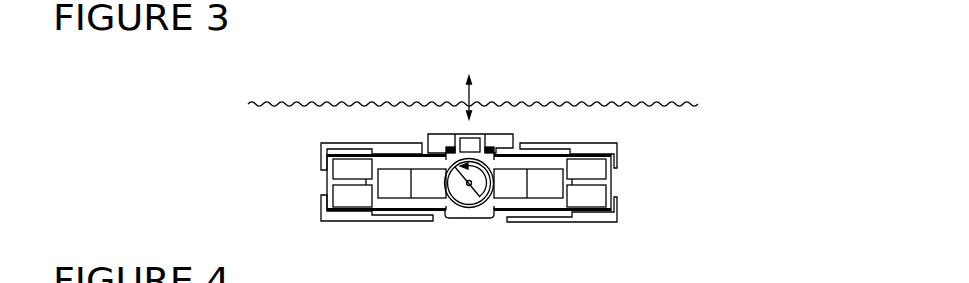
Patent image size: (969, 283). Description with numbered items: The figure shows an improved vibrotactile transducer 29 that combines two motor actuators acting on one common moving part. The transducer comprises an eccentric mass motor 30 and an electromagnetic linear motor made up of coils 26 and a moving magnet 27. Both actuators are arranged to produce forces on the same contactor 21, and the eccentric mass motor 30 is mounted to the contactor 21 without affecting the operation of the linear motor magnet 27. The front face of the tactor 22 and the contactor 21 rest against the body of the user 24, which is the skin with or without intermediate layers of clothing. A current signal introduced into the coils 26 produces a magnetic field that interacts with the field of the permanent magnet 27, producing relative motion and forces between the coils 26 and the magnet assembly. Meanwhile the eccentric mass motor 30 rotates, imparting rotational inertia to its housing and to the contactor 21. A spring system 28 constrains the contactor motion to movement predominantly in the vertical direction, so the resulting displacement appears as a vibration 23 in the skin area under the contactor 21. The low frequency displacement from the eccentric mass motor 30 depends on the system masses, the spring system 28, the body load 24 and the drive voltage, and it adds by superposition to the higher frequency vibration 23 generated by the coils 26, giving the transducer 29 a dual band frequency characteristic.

The contactor 21 is at (522, 131).
The front face of the tactor 22 is at (613, 137).
The vibration 23 is at (501, 82).
The body of the user 24 is at (346, 94).
The coils 26 is at (595, 171).
The moving magnet 27 is at (558, 199).
The spring system 28 is at (398, 228).
The improved vibrotactile transducer 29 is at (172, 131).
The eccentric mass motor 30 is at (472, 204).